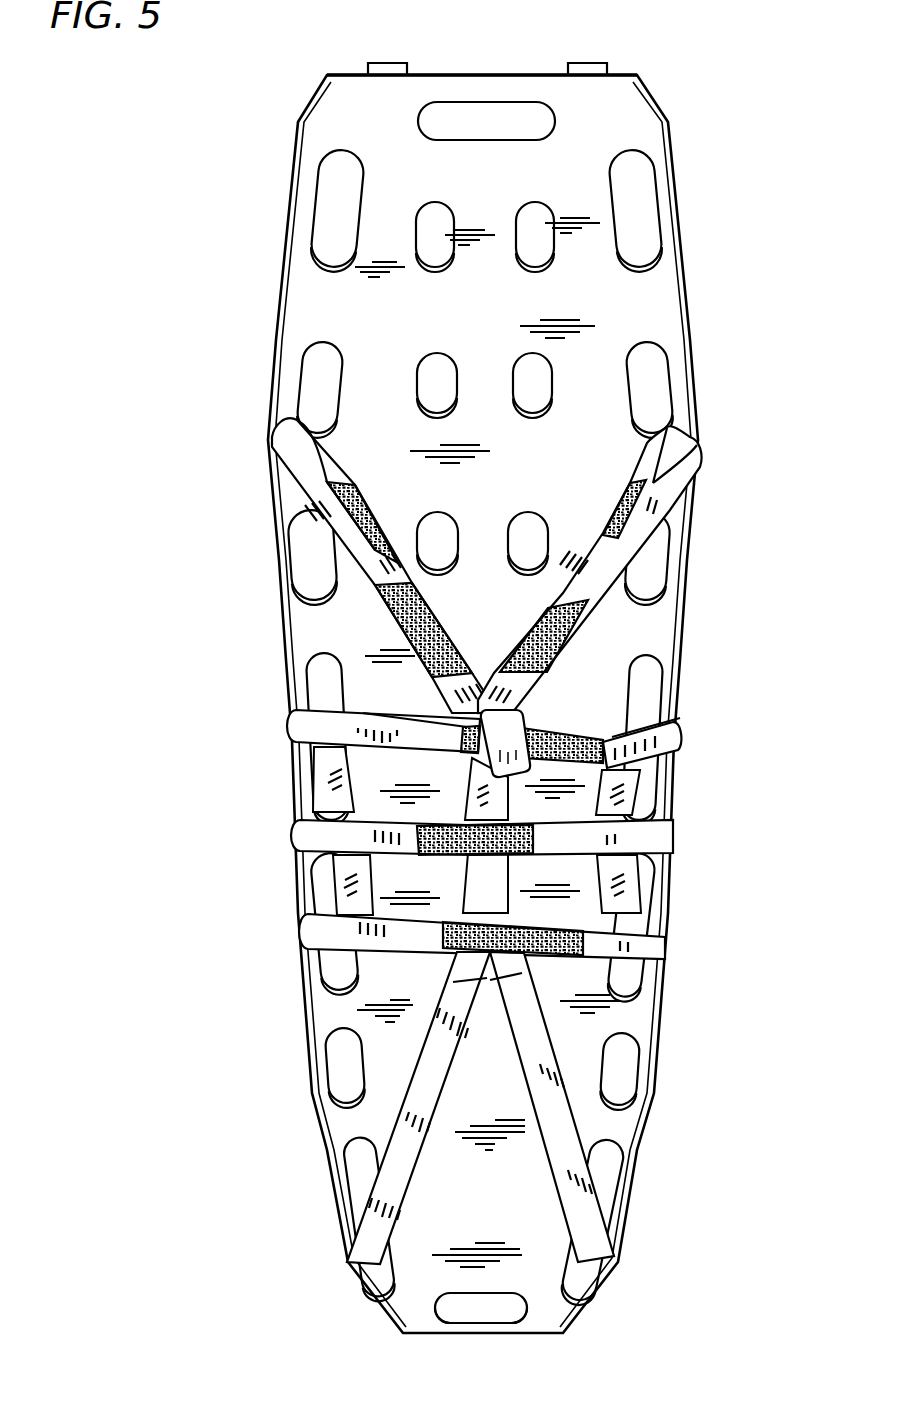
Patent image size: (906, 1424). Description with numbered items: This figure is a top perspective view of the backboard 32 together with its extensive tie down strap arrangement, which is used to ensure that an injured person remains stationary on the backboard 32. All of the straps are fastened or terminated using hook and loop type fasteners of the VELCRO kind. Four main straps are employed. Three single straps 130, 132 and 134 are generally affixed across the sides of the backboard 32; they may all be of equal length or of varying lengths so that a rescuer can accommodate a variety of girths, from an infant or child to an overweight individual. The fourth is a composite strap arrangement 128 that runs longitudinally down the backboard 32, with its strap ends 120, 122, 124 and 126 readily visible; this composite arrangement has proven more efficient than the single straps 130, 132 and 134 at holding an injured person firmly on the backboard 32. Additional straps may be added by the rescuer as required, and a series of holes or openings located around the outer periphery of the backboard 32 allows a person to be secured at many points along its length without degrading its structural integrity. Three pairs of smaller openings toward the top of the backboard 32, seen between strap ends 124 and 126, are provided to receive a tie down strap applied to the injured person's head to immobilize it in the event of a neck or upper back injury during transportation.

The backboard 32 is at (617, 1122).
The strap end 120 is at (580, 1180).
The strap end 122 is at (373, 1230).
The strap end 124 is at (700, 485).
The strap end 126 is at (295, 482).
The composite strap arrangement 128 is at (578, 640).
The strap 130 is at (649, 940).
The strap 132 is at (646, 842).
The strap 134 is at (660, 742).